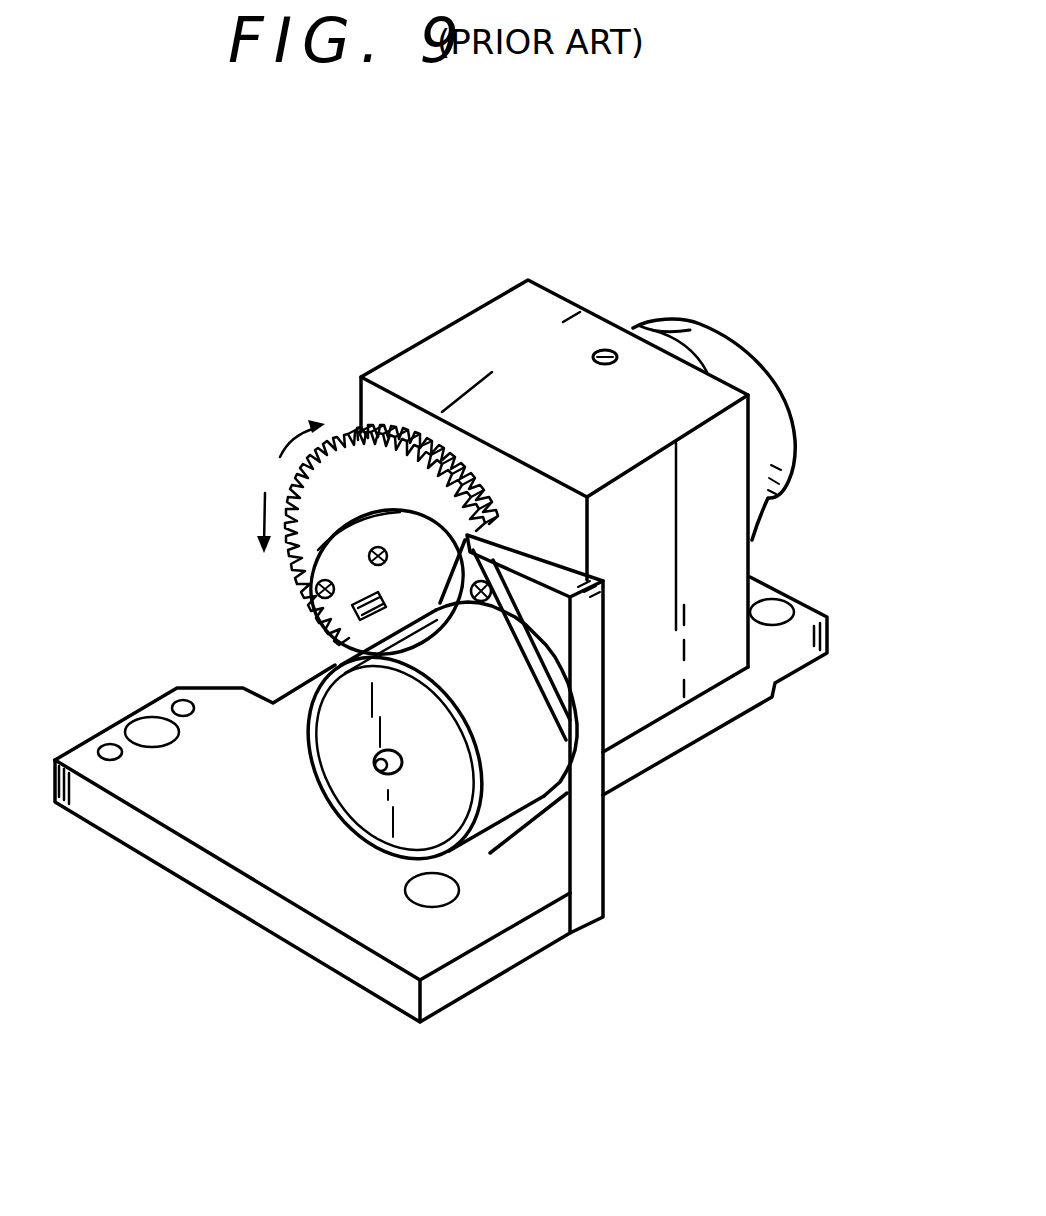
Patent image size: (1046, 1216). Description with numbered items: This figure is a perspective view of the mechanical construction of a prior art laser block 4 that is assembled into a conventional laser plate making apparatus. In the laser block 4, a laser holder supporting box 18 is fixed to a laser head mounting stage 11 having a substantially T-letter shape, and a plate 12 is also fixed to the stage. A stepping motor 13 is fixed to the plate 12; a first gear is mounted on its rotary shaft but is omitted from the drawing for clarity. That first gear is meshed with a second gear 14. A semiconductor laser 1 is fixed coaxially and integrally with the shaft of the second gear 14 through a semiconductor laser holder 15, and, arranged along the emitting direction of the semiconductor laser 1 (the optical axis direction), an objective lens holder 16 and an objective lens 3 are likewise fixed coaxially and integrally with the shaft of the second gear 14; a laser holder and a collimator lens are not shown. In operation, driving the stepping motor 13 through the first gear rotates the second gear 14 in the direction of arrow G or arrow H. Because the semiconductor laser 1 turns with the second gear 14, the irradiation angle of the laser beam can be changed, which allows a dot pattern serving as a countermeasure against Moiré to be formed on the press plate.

The laser block 4 is at (224, 209).
The laser holder supporting box 18 is at (400, 362).
The objective lens holder 16 is at (653, 330).
The objective lens 3 is at (770, 402).
The second gear 14 is at (307, 487).
The semiconductor laser holder 15 is at (313, 610).
The semiconductor laser 1 is at (317, 632).
The stepping motor 13 is at (515, 752).
The plate 12 is at (590, 873).
The laser head mounting stage 11 is at (210, 878).